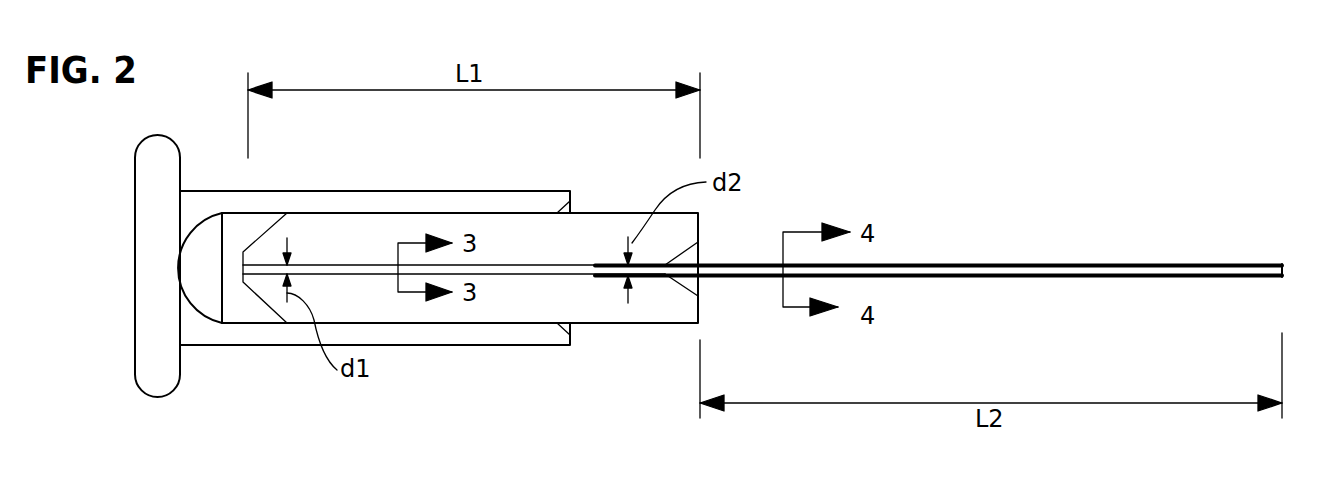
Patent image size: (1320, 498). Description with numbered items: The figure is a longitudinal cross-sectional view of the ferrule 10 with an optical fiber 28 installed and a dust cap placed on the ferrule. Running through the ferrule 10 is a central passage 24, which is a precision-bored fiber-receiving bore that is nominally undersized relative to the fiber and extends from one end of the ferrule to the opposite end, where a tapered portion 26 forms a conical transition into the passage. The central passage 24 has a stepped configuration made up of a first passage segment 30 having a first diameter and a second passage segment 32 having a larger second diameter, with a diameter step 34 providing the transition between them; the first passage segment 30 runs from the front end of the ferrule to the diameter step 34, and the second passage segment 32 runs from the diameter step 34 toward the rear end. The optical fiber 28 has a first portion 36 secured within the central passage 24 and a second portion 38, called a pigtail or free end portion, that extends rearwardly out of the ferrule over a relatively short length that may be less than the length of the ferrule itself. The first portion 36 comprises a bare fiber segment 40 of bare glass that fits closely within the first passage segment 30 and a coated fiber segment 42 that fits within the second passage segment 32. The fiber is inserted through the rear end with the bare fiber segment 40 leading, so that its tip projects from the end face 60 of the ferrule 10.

The ferrule 10 is at (593, 218).
The central passage 24 is at (522, 262).
The tapered portion 26 is at (692, 243).
The optical fiber 28 is at (1070, 261).
The first passage segment 30 is at (333, 265).
The second passage segment 32 is at (660, 277).
The diameter step 34 is at (593, 272).
The first portion of the optical fiber 36 is at (356, 259).
The second portion of the optical fiber 38 is at (1148, 262).
The bare fiber segment 40 is at (378, 266).
The coated fiber segment 42 is at (613, 275).
The end face 60 is at (243, 285).